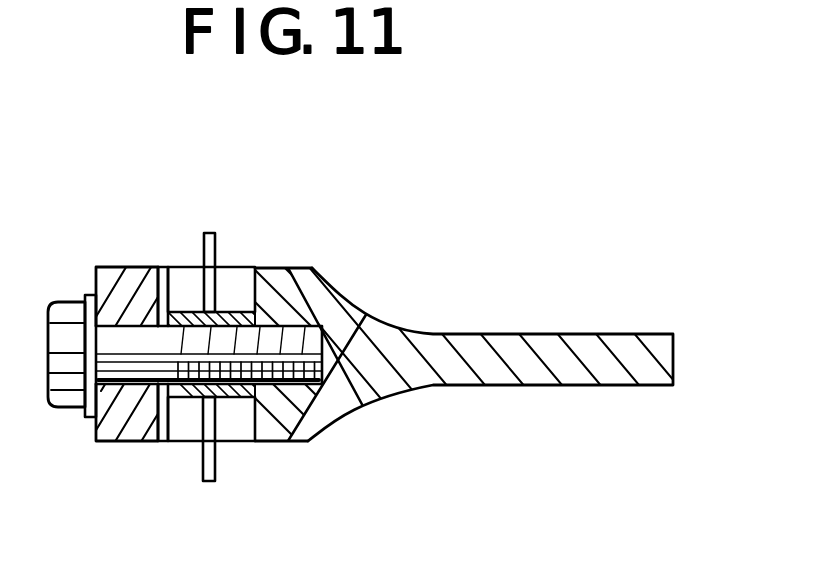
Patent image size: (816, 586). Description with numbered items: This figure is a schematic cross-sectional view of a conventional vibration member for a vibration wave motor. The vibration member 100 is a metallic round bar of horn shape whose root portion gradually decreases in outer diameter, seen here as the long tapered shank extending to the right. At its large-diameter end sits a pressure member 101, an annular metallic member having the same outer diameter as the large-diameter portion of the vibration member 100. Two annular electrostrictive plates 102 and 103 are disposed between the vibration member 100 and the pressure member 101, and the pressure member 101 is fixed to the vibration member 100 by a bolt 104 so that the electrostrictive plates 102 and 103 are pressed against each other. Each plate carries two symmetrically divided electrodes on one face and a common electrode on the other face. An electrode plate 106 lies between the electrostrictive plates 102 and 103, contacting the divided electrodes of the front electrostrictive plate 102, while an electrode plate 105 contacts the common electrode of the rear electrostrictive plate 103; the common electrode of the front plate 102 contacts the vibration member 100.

The vibration member 100 is at (340, 302).
The pressure member 101 is at (123, 441).
The electrostrictive plate 102 is at (245, 268).
The electrostrictive plate 103 is at (192, 267).
The bolt 104 is at (128, 334).
The electrode plate 105 is at (164, 267).
The electrode plate 106 is at (217, 267).